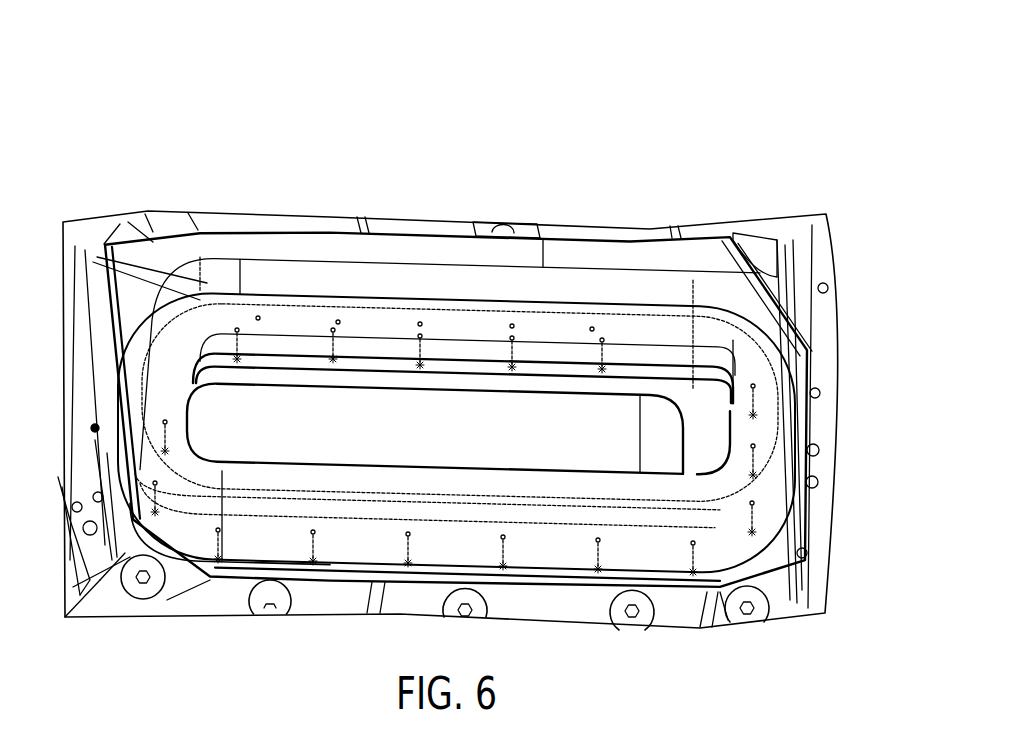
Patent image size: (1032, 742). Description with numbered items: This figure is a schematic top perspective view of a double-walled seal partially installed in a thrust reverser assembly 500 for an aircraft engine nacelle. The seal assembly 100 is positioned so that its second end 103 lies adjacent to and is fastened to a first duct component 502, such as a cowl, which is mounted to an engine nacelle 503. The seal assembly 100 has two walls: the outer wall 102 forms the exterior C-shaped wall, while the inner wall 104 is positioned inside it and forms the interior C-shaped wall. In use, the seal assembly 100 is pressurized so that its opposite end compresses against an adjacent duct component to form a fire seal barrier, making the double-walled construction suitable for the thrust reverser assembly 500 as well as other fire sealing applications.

The thrust reverser assembly 500 is at (112, 142).
The seal assembly 100 is at (852, 262).
The outer wall 102 is at (760, 364).
The second end 103 is at (822, 497).
The inner wall 104 is at (93, 250).
The first duct component 502 is at (720, 428).
The engine nacelle 503 is at (716, 612).